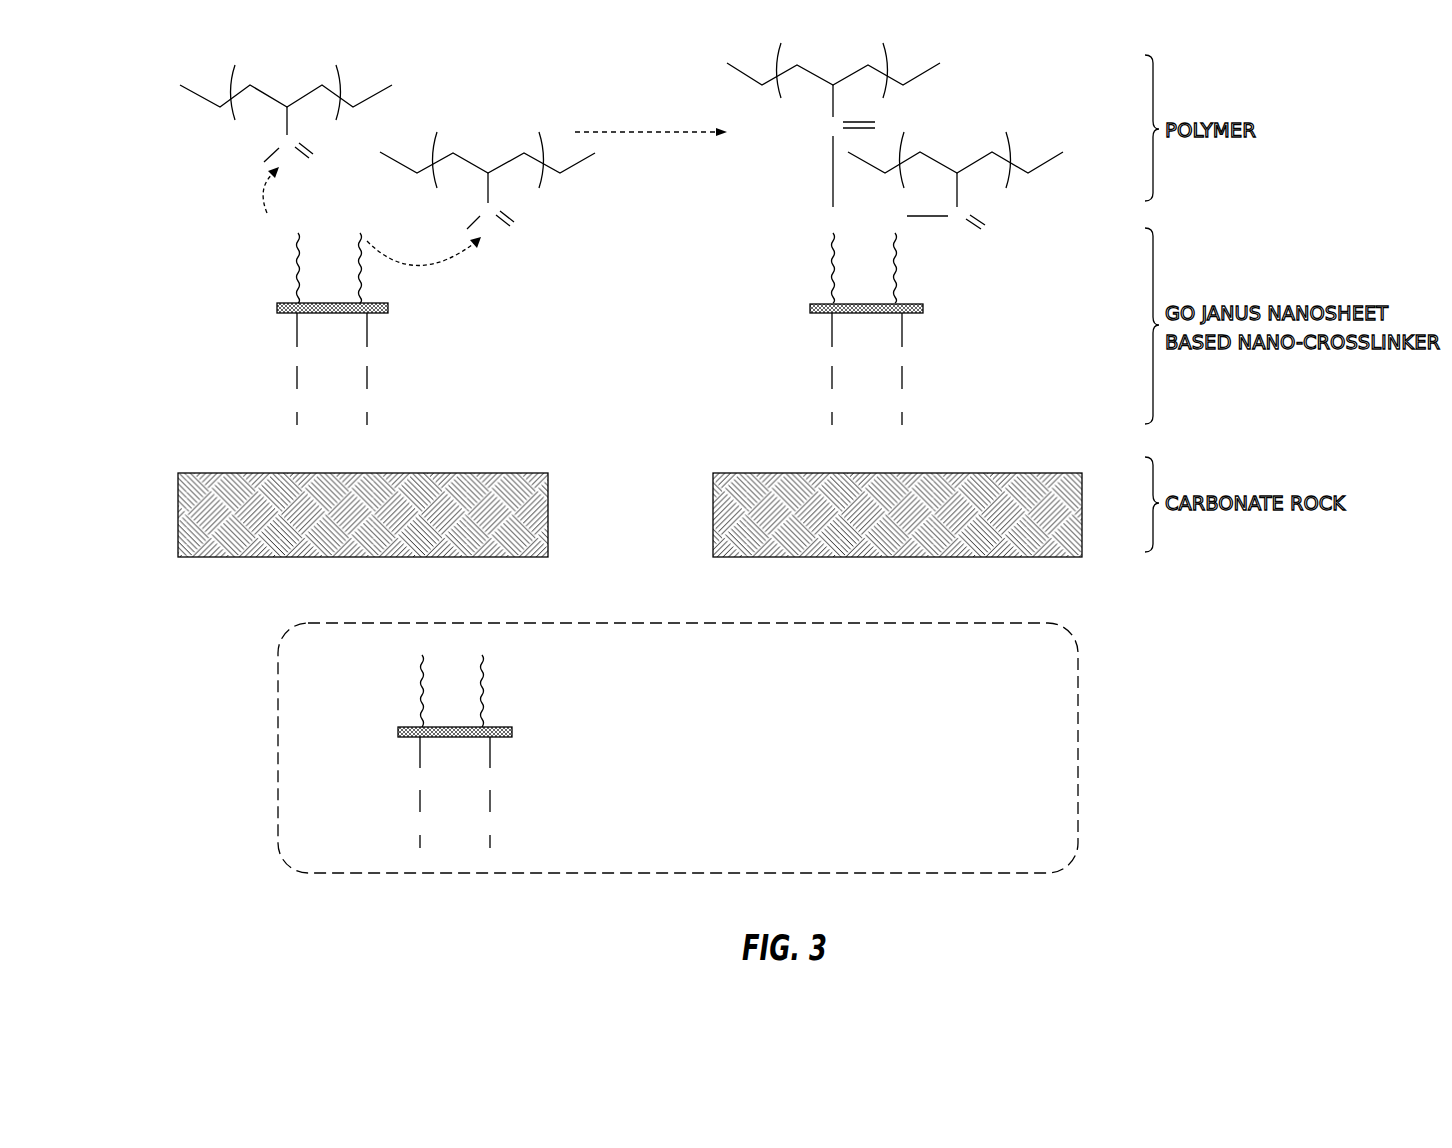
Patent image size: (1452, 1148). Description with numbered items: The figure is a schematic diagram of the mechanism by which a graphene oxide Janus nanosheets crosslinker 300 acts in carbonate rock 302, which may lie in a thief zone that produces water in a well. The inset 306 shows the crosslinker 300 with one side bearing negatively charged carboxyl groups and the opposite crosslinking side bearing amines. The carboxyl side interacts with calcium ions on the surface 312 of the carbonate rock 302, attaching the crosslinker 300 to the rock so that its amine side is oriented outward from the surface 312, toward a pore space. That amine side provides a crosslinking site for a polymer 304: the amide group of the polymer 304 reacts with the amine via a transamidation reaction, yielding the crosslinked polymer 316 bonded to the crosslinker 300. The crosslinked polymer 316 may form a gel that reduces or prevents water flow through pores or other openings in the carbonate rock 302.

The graphene oxide Janus nanosheets crosslinker 300 is at (289, 302).
The carbonate rock 302 is at (206, 553).
The polymer 304 is at (218, 187).
The inset 306 is at (362, 622).
The surface 312 is at (527, 473).
The crosslinked polymer 316 is at (1005, 85).